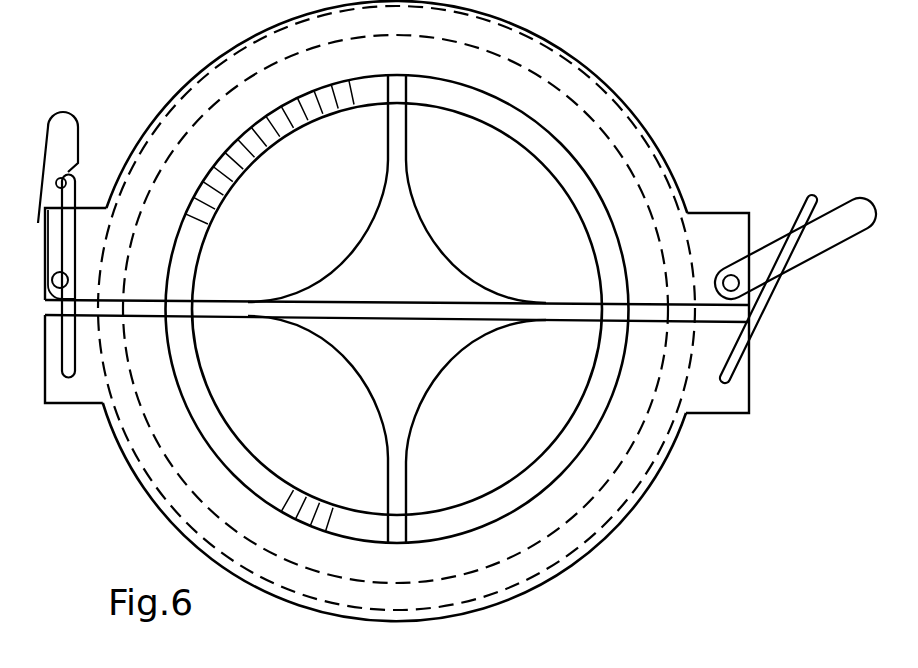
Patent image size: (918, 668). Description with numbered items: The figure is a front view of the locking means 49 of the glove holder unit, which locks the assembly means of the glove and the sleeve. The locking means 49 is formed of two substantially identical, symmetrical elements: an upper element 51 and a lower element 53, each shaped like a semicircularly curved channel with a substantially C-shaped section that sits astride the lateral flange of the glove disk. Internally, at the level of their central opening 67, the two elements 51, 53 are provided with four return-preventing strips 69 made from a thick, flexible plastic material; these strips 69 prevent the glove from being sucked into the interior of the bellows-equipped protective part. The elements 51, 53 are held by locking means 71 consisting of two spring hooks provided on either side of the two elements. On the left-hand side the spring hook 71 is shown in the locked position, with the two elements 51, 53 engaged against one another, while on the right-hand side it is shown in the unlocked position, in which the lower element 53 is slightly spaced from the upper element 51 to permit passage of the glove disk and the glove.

The locking means 49 is at (671, 466).
The upper element 51 is at (598, 77).
The lower element 53 is at (596, 549).
The central opening 67 is at (411, 311).
The return-preventing strips 69 is at (283, 398).
The locking means (spring hooks) 71 is at (62, 113).